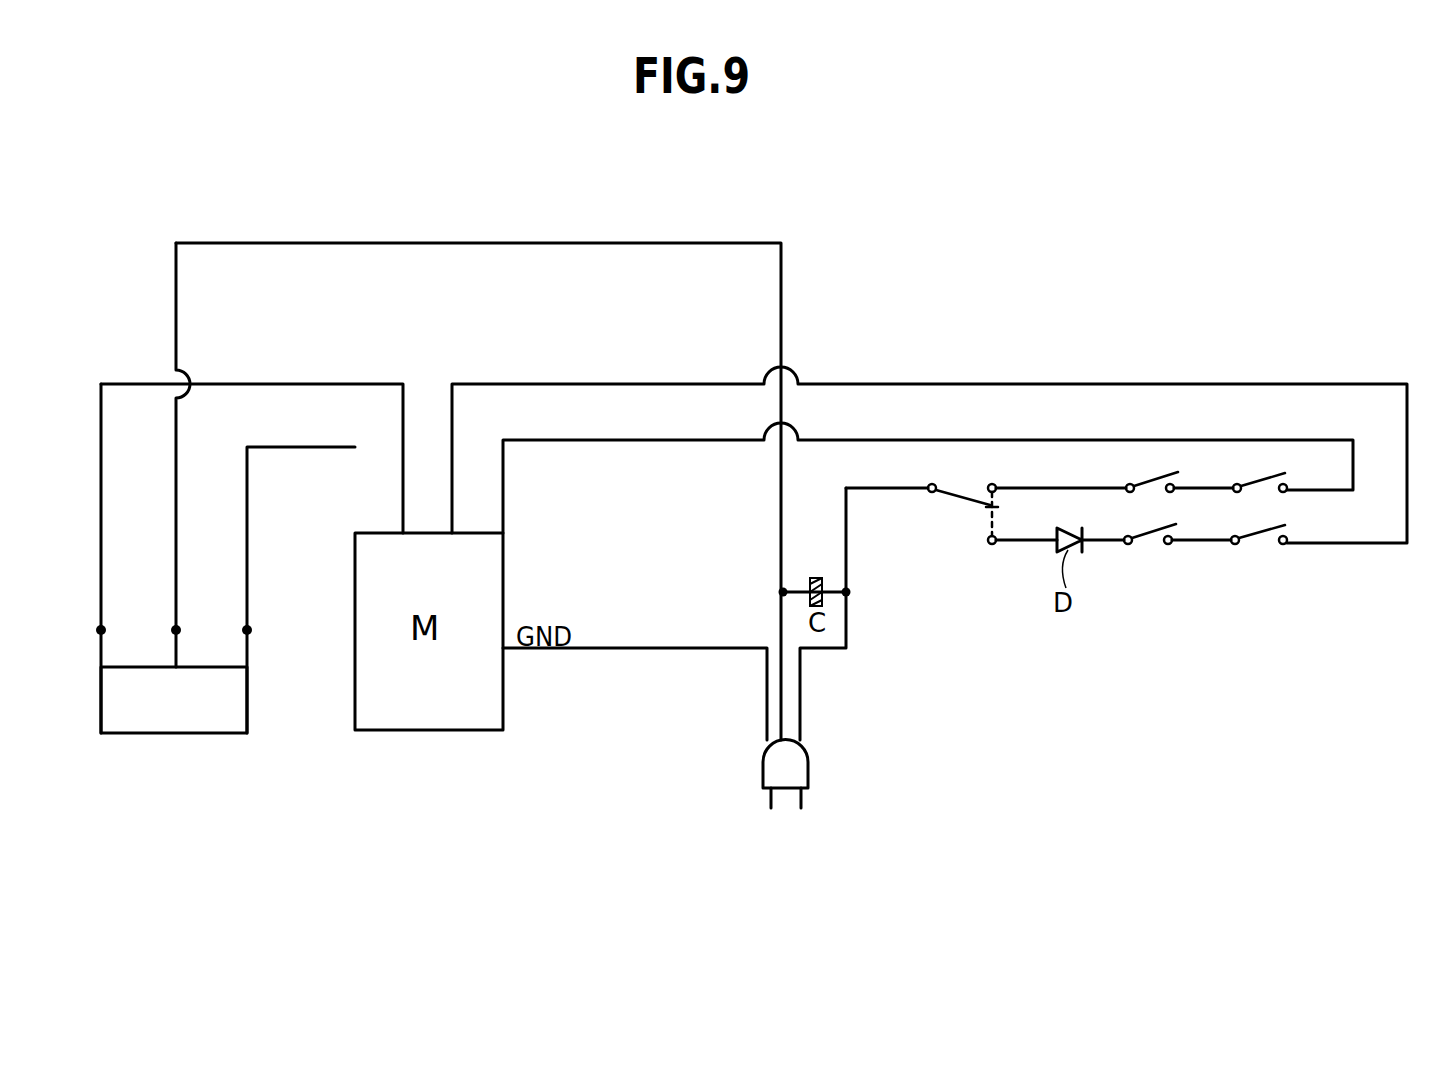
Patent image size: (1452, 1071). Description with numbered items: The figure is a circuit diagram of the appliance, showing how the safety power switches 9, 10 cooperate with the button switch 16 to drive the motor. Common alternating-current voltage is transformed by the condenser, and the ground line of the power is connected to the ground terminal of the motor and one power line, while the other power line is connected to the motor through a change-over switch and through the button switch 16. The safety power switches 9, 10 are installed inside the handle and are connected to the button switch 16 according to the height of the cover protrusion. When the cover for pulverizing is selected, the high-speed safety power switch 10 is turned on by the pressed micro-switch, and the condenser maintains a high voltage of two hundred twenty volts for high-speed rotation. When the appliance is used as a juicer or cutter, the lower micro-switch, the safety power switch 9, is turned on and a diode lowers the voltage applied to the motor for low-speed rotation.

The safety power switch 9 is at (1150, 548).
The safety power switch 10 is at (1259, 476).
The button switch 16 is at (961, 503).